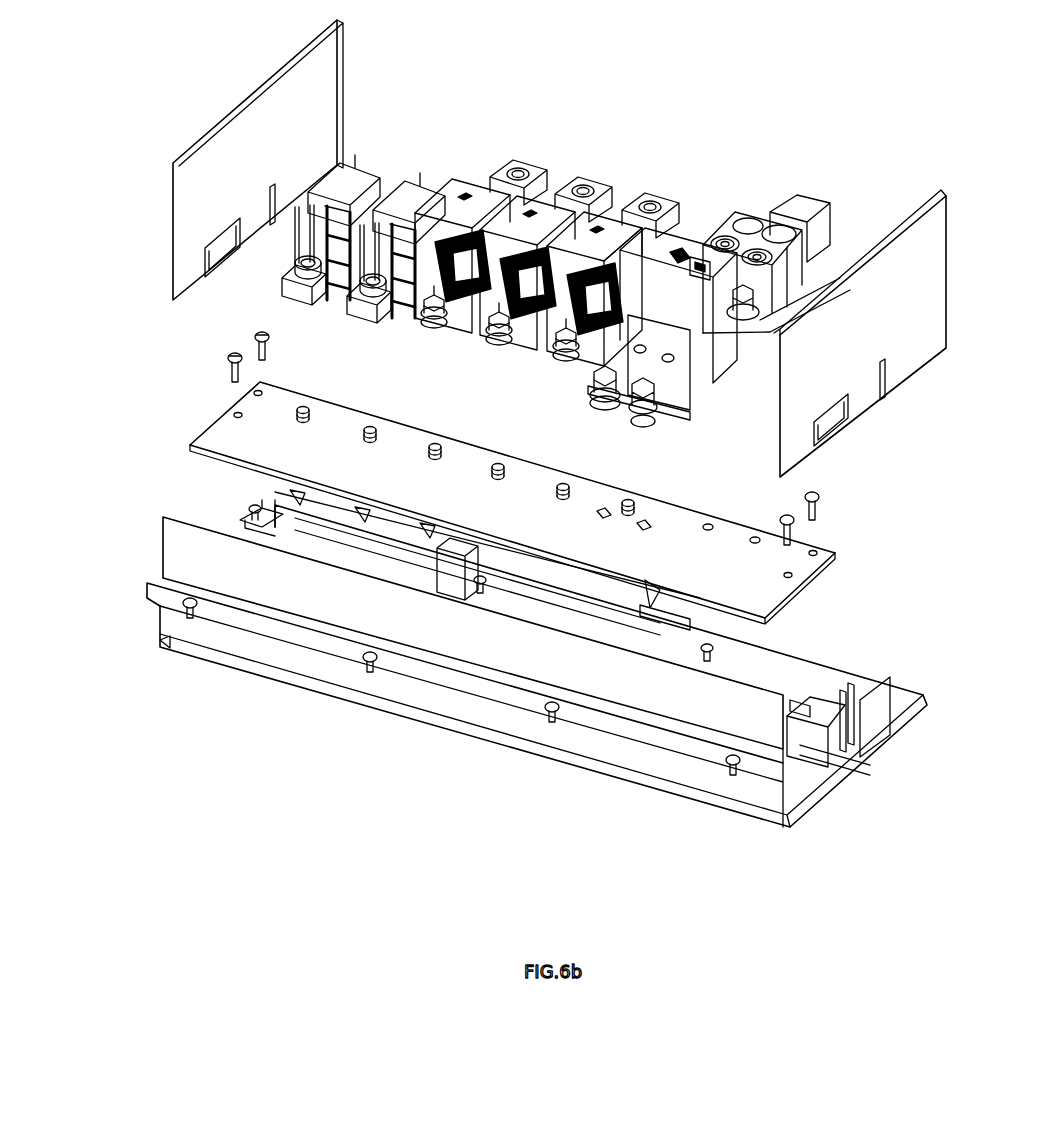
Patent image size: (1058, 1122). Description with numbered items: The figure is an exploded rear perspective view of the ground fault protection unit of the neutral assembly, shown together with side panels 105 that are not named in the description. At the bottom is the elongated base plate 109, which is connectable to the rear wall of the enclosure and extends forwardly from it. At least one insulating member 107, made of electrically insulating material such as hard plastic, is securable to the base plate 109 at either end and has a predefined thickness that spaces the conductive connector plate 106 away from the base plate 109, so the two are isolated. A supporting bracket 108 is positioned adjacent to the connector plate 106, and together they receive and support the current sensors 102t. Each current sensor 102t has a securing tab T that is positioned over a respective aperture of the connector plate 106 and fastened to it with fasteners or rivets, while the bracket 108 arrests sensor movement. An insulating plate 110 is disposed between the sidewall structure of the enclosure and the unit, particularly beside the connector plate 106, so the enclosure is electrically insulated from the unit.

The side panels 105 is at (340, 73).
The current sensors 102t is at (380, 293).
The connector plate 106 is at (248, 440).
The supporting bracket 108 is at (283, 503).
The insulating plate 110 is at (233, 552).
The base plate 109 is at (793, 665).
The insulating member 107 is at (820, 747).
The securing tab T is at (617, 395).